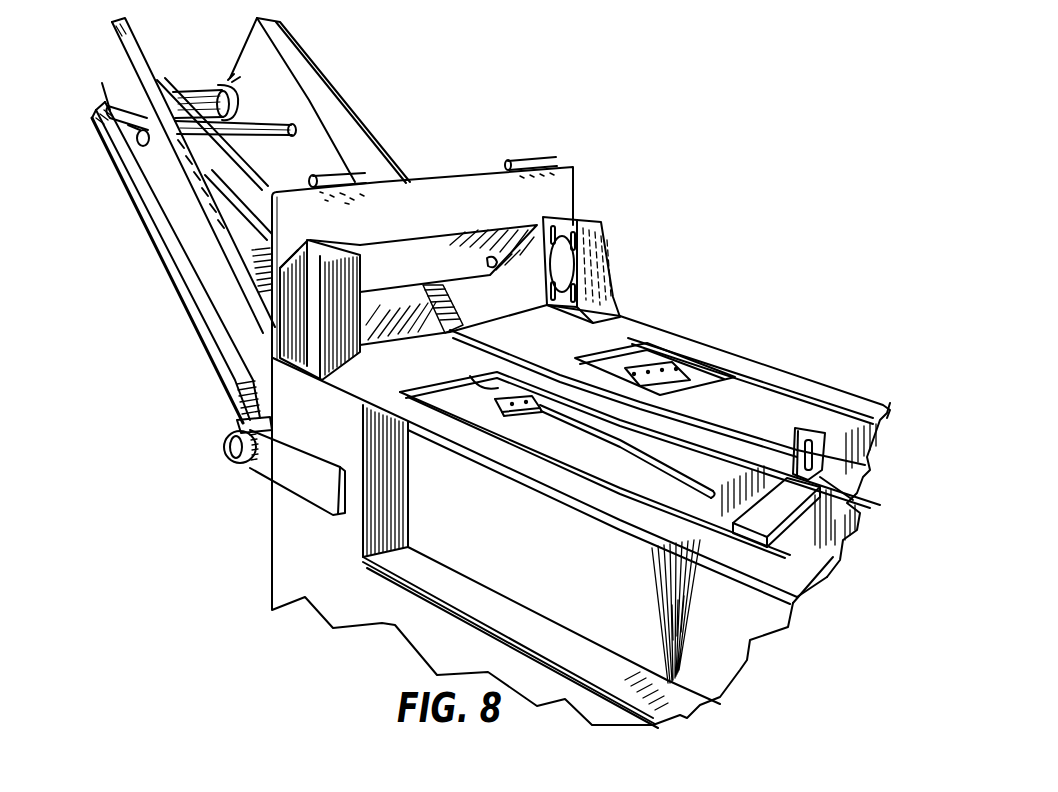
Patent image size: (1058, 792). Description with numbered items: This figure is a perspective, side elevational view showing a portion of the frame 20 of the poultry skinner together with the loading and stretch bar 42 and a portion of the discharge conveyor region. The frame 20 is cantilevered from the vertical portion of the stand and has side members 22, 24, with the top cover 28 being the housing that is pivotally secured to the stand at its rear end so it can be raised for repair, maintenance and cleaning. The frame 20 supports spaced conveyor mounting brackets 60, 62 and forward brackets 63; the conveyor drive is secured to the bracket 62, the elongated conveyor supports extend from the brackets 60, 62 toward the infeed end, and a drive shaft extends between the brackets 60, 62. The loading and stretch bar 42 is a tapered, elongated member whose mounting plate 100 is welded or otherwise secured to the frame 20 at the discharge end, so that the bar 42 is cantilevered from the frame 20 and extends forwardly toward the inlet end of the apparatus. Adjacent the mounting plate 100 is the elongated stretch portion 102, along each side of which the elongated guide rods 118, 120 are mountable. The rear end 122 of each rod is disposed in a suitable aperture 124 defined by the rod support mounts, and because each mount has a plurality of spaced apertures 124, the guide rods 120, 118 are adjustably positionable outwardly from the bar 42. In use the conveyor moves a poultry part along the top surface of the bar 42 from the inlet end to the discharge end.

The frame 20 is at (688, 318).
The side member 22 is at (460, 527).
The side member 24 is at (774, 375).
The top cover 28 is at (563, 192).
The loading and stretch bar 42 is at (817, 420).
The conveyor mounting bracket 60 is at (290, 318).
The conveyor mounting bracket 62 is at (612, 248).
The forward bracket 63 is at (783, 510).
The mounting plate 100 is at (525, 337).
The stretch portion 102 is at (748, 437).
The guide rod 118 is at (590, 440).
The guide rod 120 is at (703, 392).
The rear end 122 is at (468, 380).
The aperture 124 is at (493, 415).